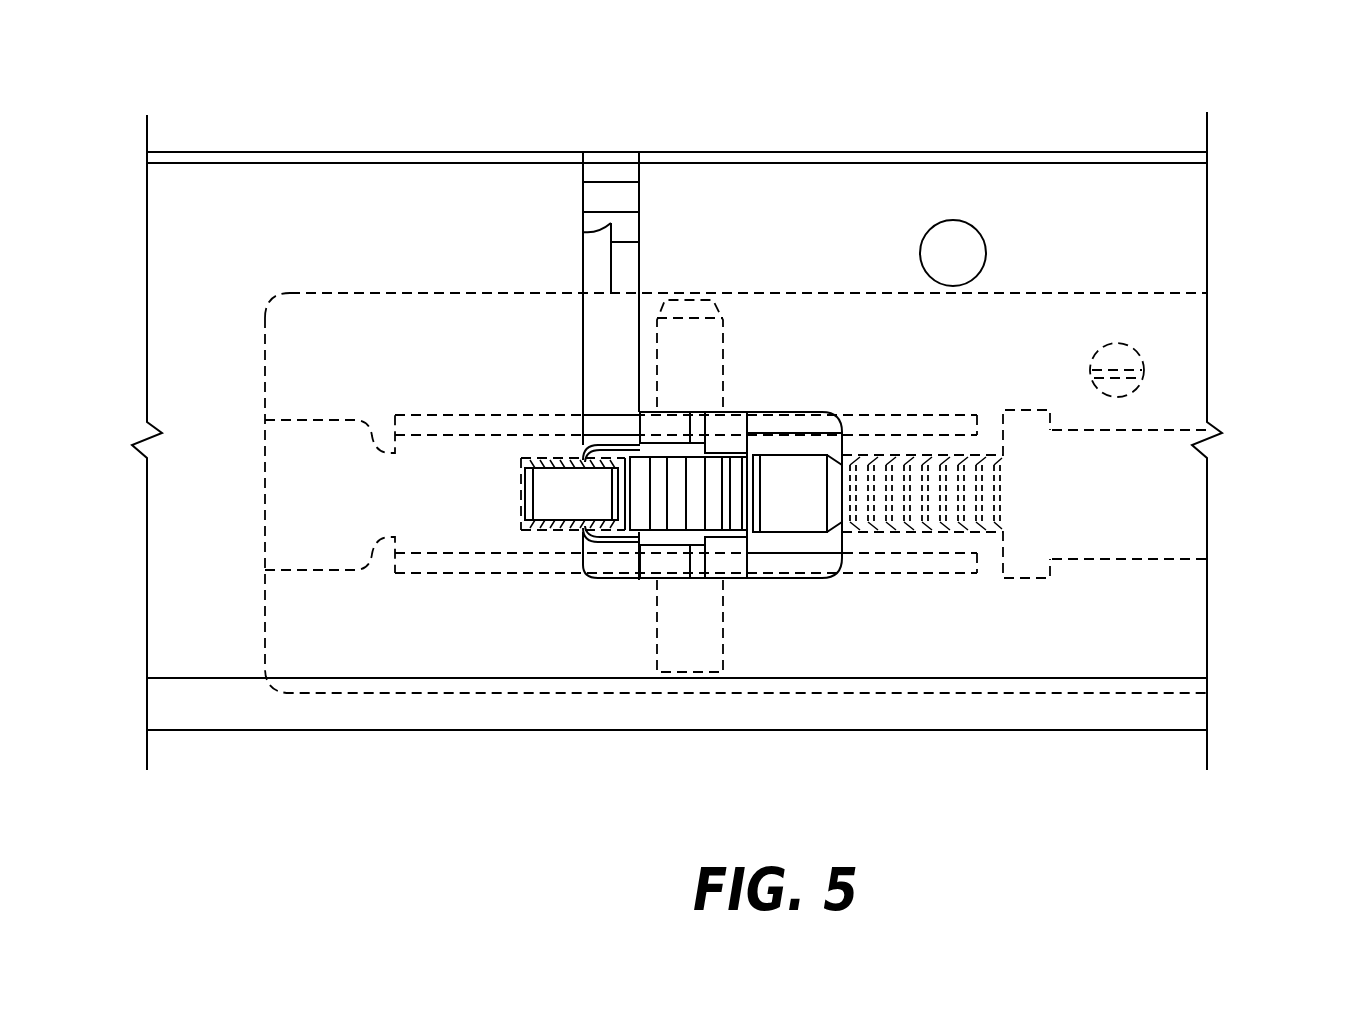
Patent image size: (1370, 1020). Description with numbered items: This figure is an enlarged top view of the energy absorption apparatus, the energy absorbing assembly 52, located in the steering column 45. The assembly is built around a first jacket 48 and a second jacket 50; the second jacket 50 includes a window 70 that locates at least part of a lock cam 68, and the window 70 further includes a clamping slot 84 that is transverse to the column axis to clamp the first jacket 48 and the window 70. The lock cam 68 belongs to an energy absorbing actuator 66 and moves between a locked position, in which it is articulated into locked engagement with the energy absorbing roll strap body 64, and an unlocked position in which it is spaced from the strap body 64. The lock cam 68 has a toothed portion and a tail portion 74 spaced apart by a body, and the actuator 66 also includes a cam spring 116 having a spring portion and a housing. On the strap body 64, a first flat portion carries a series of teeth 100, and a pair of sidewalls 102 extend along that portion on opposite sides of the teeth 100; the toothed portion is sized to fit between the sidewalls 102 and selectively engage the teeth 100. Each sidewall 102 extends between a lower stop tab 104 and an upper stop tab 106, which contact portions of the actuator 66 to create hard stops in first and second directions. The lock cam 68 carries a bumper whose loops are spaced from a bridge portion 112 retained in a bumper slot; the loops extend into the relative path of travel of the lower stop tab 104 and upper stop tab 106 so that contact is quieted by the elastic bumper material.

The steering column 45 is at (1257, 110).
The first jacket 48 is at (1212, 345).
The second jacket 50 is at (197, 151).
The energy absorbing assembly 52 is at (760, 197).
The strap body 64 is at (1200, 522).
The energy absorbing actuator 66 is at (679, 352).
The lock cam 68 is at (629, 444).
The window 70 is at (782, 415).
The tail portion 74 is at (630, 513).
The clamping slot 84 is at (583, 168).
The series of teeth 100 is at (960, 490).
The sidewalls 102 is at (488, 427).
The lower stop tab 104 is at (440, 567).
The upper stop tab 106 is at (975, 555).
The bridge portion 112 is at (735, 498).
The cam spring 116 is at (523, 493).